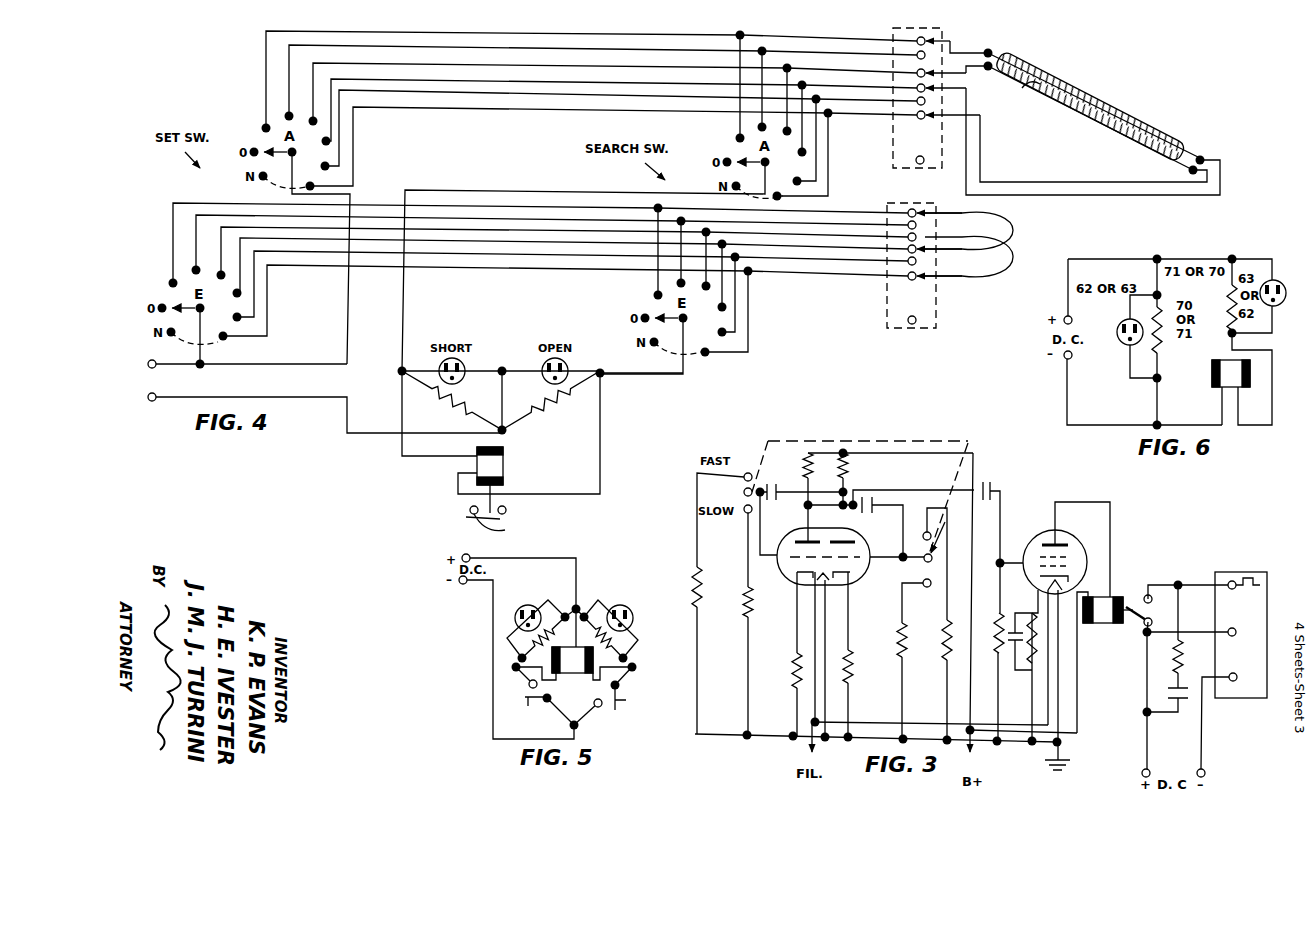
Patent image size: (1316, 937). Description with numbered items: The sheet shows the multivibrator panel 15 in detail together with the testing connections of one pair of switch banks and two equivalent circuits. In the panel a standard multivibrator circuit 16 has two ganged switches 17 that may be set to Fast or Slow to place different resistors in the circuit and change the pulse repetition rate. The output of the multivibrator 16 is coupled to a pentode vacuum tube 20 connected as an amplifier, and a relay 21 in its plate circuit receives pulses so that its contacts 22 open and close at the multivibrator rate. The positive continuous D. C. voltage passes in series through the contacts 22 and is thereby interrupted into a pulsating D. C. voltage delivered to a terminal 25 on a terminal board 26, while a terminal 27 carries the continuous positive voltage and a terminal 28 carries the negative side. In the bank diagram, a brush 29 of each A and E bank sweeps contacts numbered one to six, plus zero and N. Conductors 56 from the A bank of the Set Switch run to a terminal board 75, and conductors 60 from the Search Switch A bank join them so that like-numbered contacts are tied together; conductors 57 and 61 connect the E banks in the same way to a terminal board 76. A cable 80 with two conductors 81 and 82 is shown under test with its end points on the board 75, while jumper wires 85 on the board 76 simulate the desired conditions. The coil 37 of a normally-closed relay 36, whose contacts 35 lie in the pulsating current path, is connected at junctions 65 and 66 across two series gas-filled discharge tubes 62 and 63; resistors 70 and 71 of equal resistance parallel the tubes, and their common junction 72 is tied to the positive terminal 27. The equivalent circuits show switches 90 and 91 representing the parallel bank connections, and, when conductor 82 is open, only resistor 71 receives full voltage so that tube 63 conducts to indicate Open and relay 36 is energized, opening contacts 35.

In FIG. 3, the multivibrator panel 15 is at (1018, 484).
In FIG. 3, the multivibrator circuit 16 is at (774, 724).
In FIG. 3, the ganged switches 17 is at (742, 496).
In FIG. 3, the pentode vacuum tube 20 is at (1040, 536).
In FIG. 3, the relay 21 is at (1103, 623).
In FIG. 3, the contacts 22 is at (1142, 600).
In FIG. 3, the terminal 25 is at (1244, 592).
In FIG. 3, the terminal board 26 is at (1240, 572).
In FIG. 4, the terminal 27 is at (151, 401).
In FIG. 3, the terminal 27 is at (1236, 631).
In FIG. 5, the terminal 27 is at (468, 556).
In FIG. 6, the terminal 27 is at (1065, 316).
In FIG. 4, the terminal 28 is at (151, 362).
In FIG. 3, the terminal 28 is at (1234, 680).
In FIG. 5, the terminal 28 is at (464, 584).
In FIG. 6, the terminal 28 is at (1064, 360).
In FIG. 4, the brush 29 is at (477, 240).
In FIG. 4, the contacts 35 is at (496, 524).
In FIG. 4, the relay 36 is at (468, 466).
In FIG. 5, the relay 36 is at (571, 676).
In FIG. 6, the relay 36 is at (1222, 390).
In FIG. 4, the coil 37 is at (503, 465).
In FIG. 5, the coil 37 is at (571, 652).
In FIG. 6, the coil 37 is at (1236, 391).
In FIG. 4, the conductors 56 is at (414, 66).
In FIG. 4, the conductors 57 is at (375, 231).
In FIG. 4, the conductors 60 is at (818, 139).
In FIG. 4, the conductors 61 is at (737, 294).
In FIG. 4, the gas-filled discharge tube 62 is at (462, 376).
In FIG. 5, the gas-filled discharge tube 62 is at (526, 605).
In FIG. 6, the gas-filled discharge tube 62 is at (1118, 316).
In FIG. 4, the gas-filled discharge tube 63 is at (544, 379).
In FIG. 5, the gas-filled discharge tube 63 is at (628, 606).
In FIG. 6, the gas-filled discharge tube 63 is at (1262, 304).
In FIG. 4, the junction 65 is at (396, 372).
In FIG. 4, the junction 66 is at (604, 378).
In FIG. 4, the resistor 70 is at (455, 405).
In FIG. 5, the resistor 70 is at (560, 611).
In FIG. 6, the resistor 70 is at (1172, 330).
In FIG. 4, the resistor 71 is at (540, 405).
In FIG. 5, the resistor 71 is at (630, 645).
In FIG. 6, the resistor 71 is at (1232, 282).
In FIG. 4, the common junction 72 is at (506, 434).
In FIG. 4, the terminal board 75 is at (942, 34).
In FIG. 4, the terminal board 76 is at (978, 283).
In FIG. 4, the cable 80 is at (1116, 108).
In FIG. 4, the conductor 81 is at (1028, 62).
In FIG. 4, the conductor 82 is at (1024, 88).
In FIG. 4, the jumper wires 85 is at (1022, 236).
In FIG. 5, the switch 90 is at (528, 704).
In FIG. 5, the switch 91 is at (610, 696).